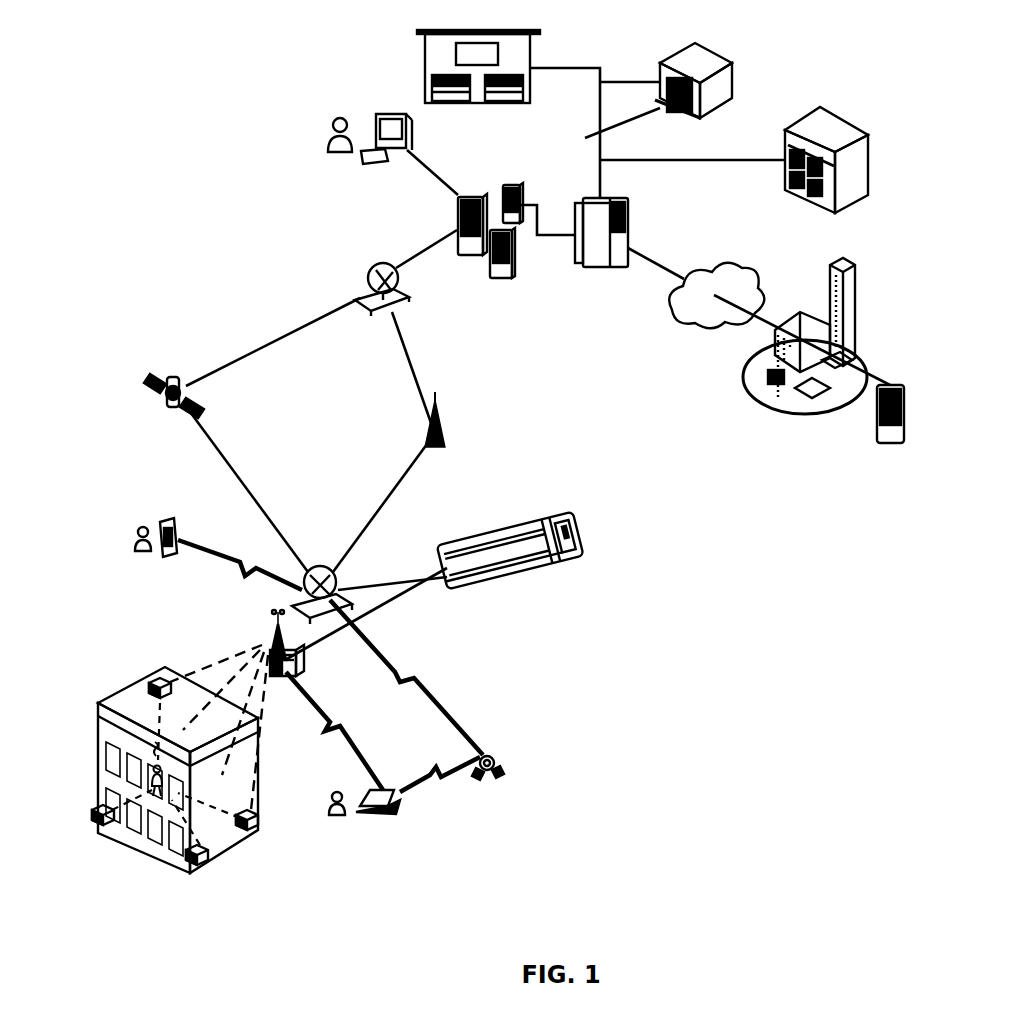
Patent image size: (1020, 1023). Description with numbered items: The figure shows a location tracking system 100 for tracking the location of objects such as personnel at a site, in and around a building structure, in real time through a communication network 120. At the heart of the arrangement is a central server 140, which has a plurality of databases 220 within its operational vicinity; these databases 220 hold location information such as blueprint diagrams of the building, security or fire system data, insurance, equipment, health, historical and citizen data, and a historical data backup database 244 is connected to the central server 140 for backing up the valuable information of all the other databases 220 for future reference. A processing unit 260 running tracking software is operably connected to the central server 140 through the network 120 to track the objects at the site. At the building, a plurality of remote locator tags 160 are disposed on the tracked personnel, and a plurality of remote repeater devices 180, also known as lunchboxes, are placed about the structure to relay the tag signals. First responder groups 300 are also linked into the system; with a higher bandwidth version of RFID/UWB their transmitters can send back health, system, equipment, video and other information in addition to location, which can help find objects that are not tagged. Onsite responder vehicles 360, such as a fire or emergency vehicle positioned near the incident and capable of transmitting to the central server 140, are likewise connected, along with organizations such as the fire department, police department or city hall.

The location tracking system 100 is at (660, 513).
The communication network 120 is at (315, 563).
The central server 140 is at (305, 665).
The remote locator tags 160 is at (155, 800).
The remote repeater devices 180 is at (160, 680).
The databases 220 is at (473, 257).
The historical data backup database 244 is at (597, 268).
The processing unit 260 is at (180, 556).
The first responder groups 300 is at (530, 103).
The onsite responder vehicles 360 is at (520, 573).